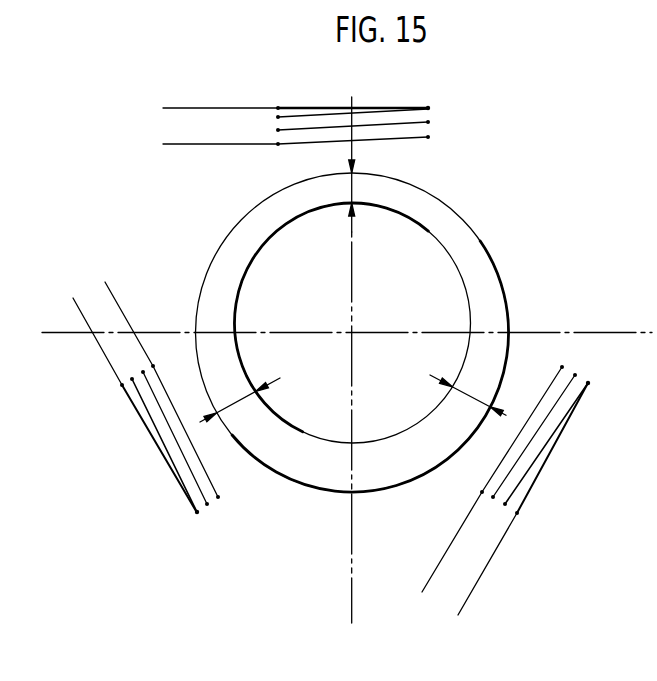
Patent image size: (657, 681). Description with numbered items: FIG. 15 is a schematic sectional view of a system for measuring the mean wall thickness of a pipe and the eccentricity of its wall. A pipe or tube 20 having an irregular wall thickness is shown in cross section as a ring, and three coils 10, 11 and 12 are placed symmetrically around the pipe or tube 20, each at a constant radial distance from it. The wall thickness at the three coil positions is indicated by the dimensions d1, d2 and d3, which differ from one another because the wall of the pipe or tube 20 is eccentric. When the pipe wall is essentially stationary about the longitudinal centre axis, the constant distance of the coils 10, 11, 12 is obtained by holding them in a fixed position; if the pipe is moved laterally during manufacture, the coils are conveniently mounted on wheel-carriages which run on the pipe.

The coil 10 is at (400, 117).
The coil 11 is at (522, 473).
The coil 12 is at (177, 458).
The pipe or tube 20 is at (498, 272).
The first gap distance d1 is at (362, 197).
The second gap distance d2 is at (468, 385).
The third gap distance d3 is at (241, 388).